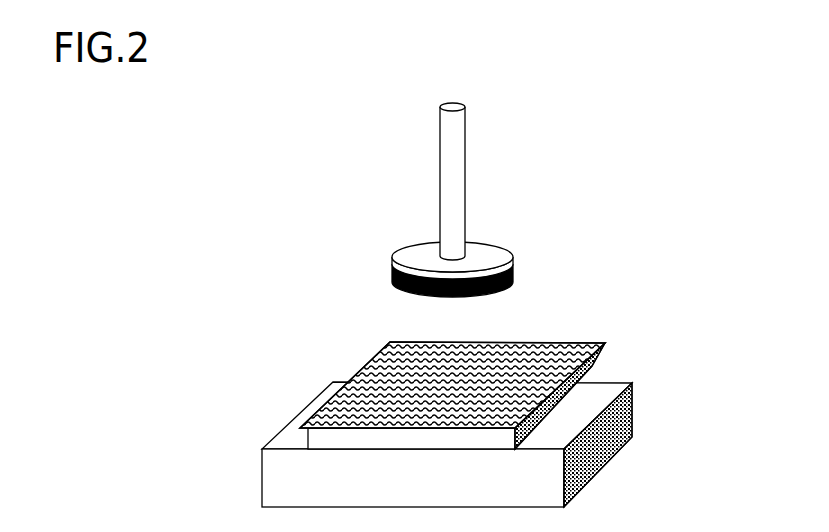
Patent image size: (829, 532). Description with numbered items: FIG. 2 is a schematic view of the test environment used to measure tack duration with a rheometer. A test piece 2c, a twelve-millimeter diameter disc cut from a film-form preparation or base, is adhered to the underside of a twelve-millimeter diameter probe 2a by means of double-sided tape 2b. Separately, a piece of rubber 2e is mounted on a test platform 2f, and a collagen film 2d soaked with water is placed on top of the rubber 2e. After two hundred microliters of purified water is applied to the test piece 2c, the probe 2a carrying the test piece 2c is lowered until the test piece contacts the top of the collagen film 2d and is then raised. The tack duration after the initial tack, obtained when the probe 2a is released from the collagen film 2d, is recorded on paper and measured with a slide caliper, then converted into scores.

The probe 2a is at (516, 181).
The double-sided tape 2b is at (508, 253).
The test piece 2c is at (508, 297).
The collagen film 2d is at (441, 361).
The rubber 2e is at (554, 407).
The test platform 2f is at (552, 482).